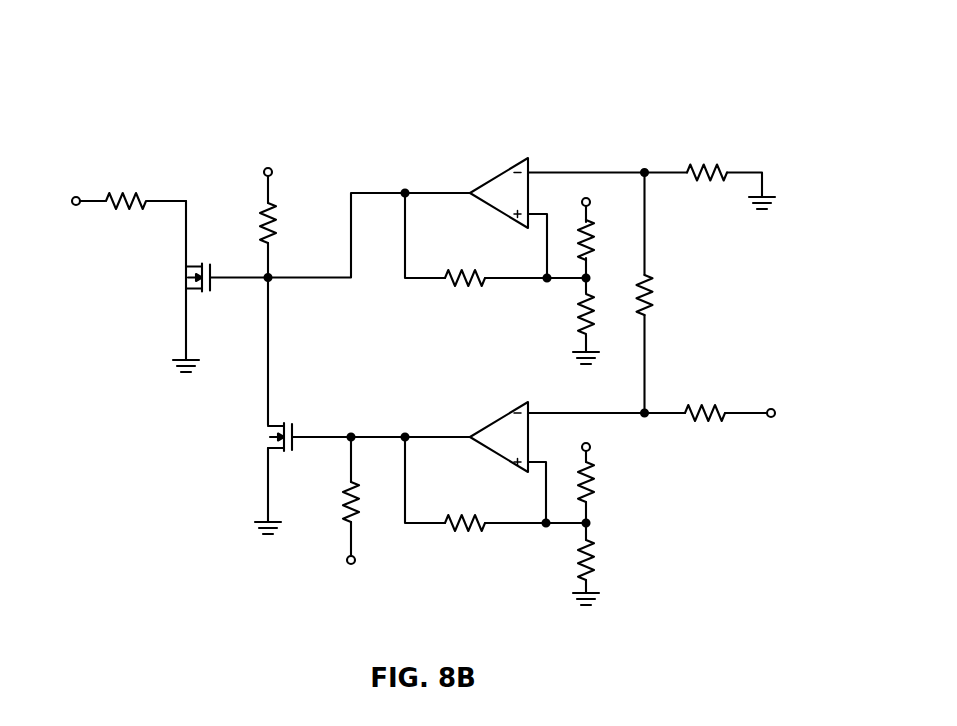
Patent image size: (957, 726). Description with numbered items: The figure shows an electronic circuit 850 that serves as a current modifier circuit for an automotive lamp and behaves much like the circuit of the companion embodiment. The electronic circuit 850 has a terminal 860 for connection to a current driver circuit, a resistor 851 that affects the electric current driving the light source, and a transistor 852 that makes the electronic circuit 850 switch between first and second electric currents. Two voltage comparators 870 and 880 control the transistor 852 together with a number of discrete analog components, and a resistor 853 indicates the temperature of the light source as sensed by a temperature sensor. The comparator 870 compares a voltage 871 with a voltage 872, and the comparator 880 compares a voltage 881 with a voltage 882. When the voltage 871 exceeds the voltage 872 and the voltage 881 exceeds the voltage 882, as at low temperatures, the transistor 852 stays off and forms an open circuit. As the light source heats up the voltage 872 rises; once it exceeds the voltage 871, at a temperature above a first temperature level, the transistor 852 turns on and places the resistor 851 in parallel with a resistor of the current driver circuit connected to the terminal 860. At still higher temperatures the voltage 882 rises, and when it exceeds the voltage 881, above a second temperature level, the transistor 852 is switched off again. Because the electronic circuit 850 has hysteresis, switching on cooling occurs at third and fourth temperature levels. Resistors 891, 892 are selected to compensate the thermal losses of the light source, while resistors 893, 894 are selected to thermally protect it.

The electronic circuit 850 is at (140, 107).
The terminal 860 is at (77, 213).
The resistor 851 is at (127, 217).
The transistor 852 is at (200, 303).
The voltage comparator 880 is at (502, 185).
The voltage 882 is at (537, 167).
The voltage 881 is at (537, 212).
The resistor 893 is at (601, 242).
The resistor 894 is at (601, 318).
The resistor 853 is at (704, 397).
The voltage comparator 870 is at (484, 438).
The voltage 872 is at (539, 423).
The voltage 871 is at (540, 449).
The resistor 891 is at (608, 485).
The resistor 892 is at (608, 558).